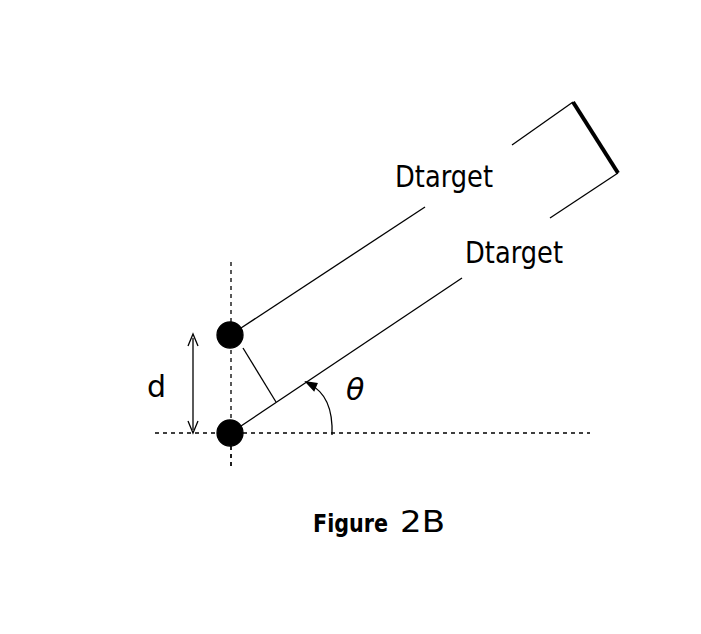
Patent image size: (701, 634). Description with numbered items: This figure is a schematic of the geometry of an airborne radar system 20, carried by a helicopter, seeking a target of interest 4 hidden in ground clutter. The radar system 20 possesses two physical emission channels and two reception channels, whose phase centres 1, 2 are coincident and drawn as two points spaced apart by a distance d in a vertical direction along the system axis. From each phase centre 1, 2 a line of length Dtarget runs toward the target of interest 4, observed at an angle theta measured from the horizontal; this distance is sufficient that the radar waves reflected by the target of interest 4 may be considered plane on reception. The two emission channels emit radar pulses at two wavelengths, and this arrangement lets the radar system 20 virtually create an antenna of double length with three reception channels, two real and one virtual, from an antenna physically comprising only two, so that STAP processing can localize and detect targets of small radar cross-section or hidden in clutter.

The phase centre 1 is at (212, 448).
The phase centre 2 is at (212, 317).
The target of interest 4 is at (575, 97).
The airborne radar system 20 is at (237, 493).